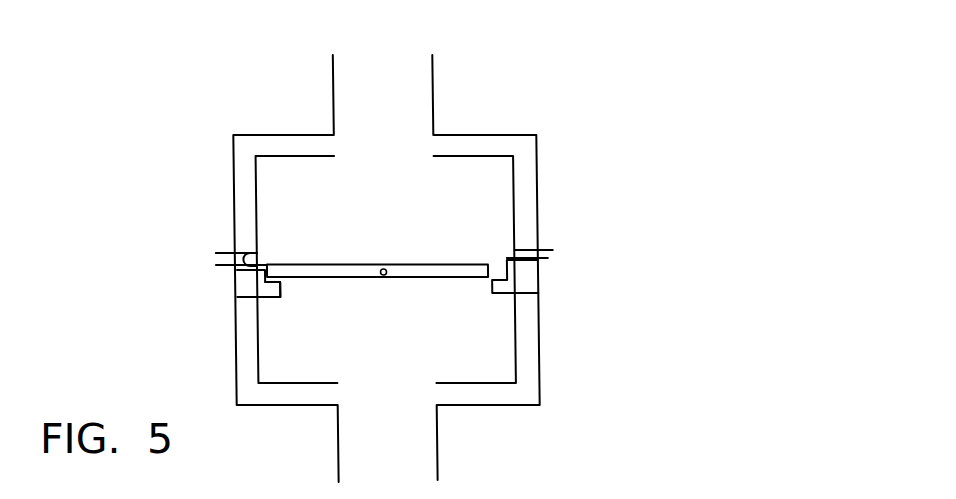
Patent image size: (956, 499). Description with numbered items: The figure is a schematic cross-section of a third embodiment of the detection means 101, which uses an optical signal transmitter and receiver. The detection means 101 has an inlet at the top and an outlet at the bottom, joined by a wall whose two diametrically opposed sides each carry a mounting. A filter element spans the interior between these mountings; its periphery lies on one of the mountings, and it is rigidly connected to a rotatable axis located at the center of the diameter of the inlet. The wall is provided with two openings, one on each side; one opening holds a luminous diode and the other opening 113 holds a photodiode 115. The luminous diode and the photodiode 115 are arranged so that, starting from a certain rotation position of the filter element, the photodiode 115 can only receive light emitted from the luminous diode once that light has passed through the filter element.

The detection means 101 is at (202, 86).
The opening 113 is at (518, 248).
The photodiode 115 is at (548, 250).